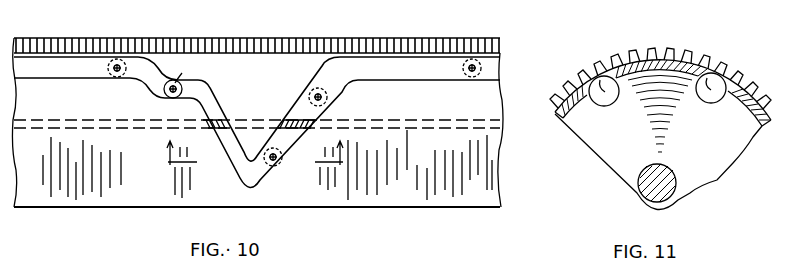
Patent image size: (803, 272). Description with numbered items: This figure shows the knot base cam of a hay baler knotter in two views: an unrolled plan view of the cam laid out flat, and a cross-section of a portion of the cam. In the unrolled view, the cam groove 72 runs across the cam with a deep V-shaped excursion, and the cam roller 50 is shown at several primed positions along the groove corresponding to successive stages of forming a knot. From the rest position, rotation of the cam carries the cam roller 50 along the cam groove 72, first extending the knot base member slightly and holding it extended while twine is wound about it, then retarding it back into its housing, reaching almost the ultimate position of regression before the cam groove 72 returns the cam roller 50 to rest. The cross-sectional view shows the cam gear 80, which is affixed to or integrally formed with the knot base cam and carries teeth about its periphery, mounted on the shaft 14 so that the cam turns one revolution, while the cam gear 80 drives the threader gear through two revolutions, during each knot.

In FIG. 10, the cam groove 72 is at (78, 68).
In FIG. 11, the cam groove 72 is at (601, 82).
In FIG. 10, the cam roller 50 is at (182, 80).
In FIG. 11, the cam gear 80 is at (688, 60).
In FIG. 11, the shaft 14 is at (640, 193).